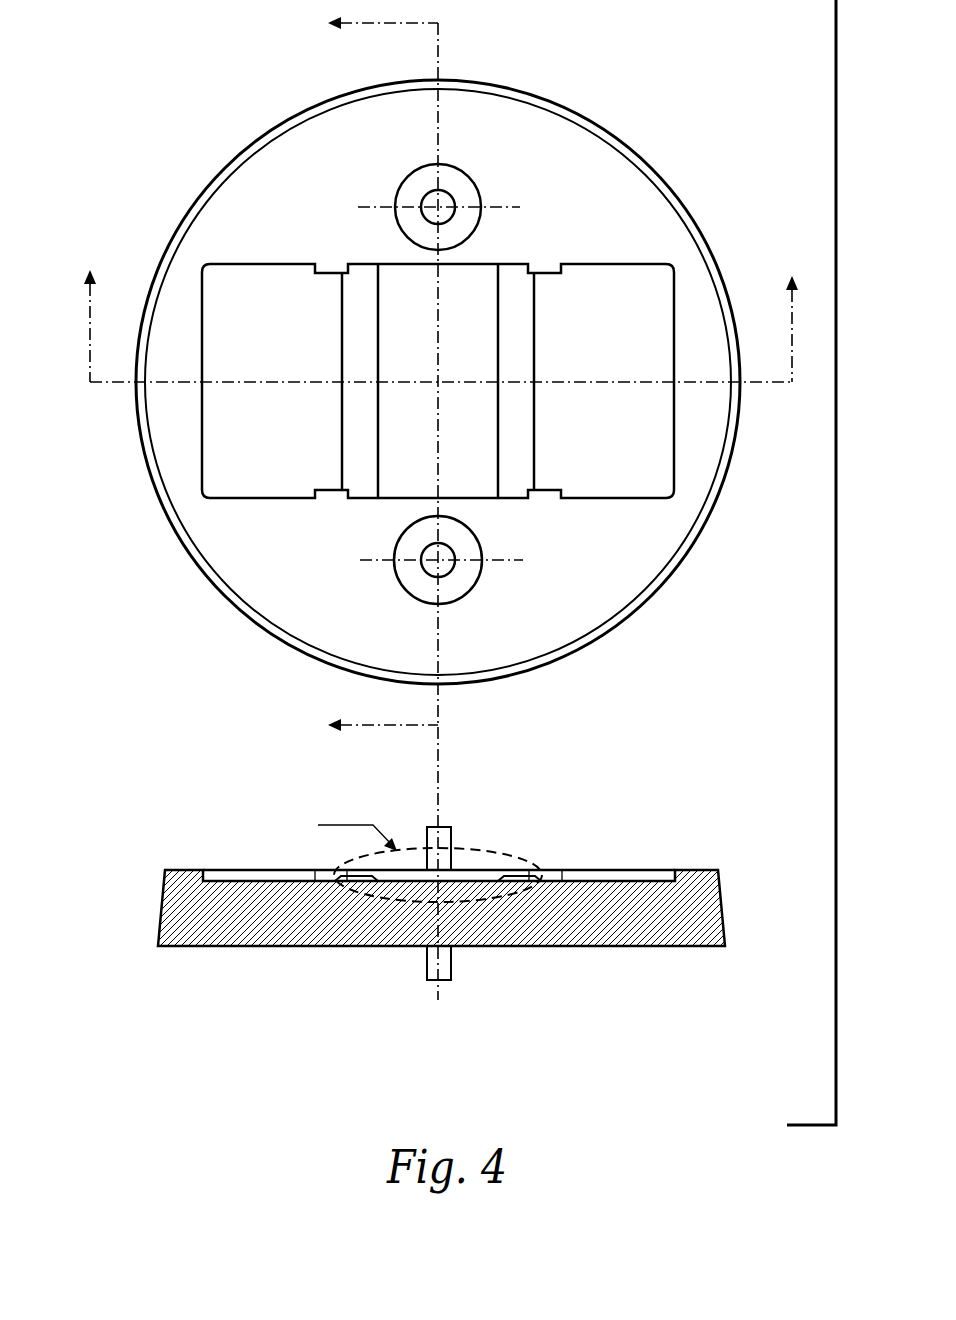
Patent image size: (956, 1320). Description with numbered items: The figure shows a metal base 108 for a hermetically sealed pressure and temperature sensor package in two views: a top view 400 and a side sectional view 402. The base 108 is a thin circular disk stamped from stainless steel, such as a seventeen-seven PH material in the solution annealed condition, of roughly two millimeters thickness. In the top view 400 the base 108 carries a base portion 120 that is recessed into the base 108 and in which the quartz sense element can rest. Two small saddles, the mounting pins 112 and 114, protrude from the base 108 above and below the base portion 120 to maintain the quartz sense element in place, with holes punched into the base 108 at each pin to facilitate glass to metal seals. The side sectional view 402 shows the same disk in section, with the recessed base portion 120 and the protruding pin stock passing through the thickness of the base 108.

The top view 400 is at (110, 133).
The base 108 is at (176, 234).
The base portion 120 is at (645, 264).
The mounting pin 114 is at (436, 206).
The mounting pin 112 is at (436, 562).
The side sectional view 402 is at (668, 816).